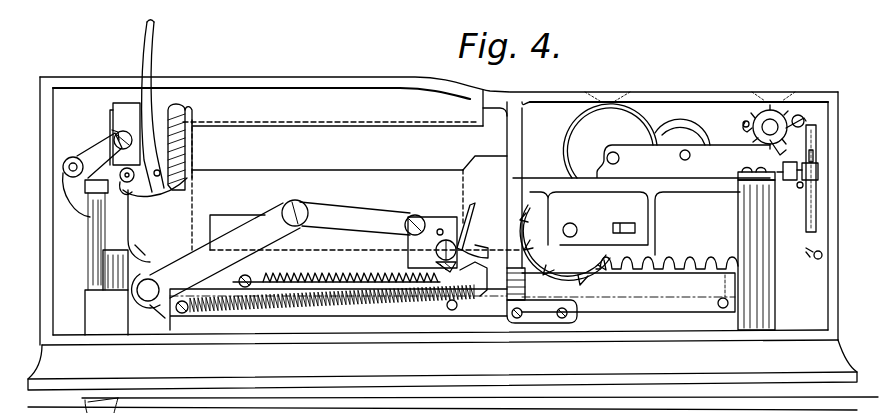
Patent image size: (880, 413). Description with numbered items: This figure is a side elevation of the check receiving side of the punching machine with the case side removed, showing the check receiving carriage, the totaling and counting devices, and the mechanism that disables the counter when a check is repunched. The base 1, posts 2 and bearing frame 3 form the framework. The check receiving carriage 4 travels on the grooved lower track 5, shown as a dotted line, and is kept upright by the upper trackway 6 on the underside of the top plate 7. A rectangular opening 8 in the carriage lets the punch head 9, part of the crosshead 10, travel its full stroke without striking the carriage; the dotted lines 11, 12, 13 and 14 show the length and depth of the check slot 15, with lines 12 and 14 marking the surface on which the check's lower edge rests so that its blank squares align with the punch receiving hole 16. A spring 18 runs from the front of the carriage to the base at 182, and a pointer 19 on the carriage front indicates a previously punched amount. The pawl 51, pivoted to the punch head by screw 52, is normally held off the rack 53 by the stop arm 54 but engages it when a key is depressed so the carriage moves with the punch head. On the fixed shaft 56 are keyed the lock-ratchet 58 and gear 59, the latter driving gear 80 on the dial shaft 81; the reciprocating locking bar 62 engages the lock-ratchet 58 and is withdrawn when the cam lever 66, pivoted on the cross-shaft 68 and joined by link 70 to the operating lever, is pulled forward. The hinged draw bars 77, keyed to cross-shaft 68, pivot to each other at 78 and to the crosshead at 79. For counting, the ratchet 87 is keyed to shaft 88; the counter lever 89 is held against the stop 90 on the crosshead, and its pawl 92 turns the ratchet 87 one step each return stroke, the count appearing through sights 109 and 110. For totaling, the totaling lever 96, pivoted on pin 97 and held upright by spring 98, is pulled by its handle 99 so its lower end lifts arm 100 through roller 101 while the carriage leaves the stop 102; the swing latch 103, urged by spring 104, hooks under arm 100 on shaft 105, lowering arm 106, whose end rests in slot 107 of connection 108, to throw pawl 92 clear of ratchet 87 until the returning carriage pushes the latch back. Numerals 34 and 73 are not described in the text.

The base 1 is at (688, 350).
The posts 2 is at (100, 258).
The bearing frame 3 is at (641, 161).
The check receiving carriage 4 is at (355, 210).
The lower track 5 is at (195, 310).
The upper trackway 6 is at (338, 128).
The top plate 7 is at (372, 90).
The rectangular opening 8 is at (230, 214).
The punch head 9 is at (432, 242).
The crosshead 10 is at (650, 264).
The dotted line 11 is at (195, 176).
The dotted line 12 is at (212, 258).
The dotted line 13 is at (466, 166).
The dotted line 14 is at (472, 256).
The check slot 15 is at (342, 172).
The punch receiving hole 16 is at (440, 228).
The spring 18 is at (350, 298).
The spring fastening point 182 is at (182, 313).
The pointer 19 is at (522, 92).
The lever 34 is at (473, 208).
The pawl 51 is at (470, 230).
The screw 52 is at (434, 264).
The rack 53 is at (322, 278).
The stop arm 54 is at (675, 260).
The shaft 56 is at (571, 224).
The lock-ratchet 58 is at (615, 272).
The gear 59 is at (565, 245).
The locking bar 62 is at (636, 222).
The cam lever 66 is at (78, 176).
The cross-shaft 68 is at (150, 300).
The link 70 is at (98, 158).
The pivot ring 73 is at (76, 158).
The hinged draw bars 77 is at (253, 250).
The pivotal connection 78 is at (303, 213).
The pivotal connection 79 is at (422, 214).
The gear 80 is at (636, 141).
The dial shaft 81 is at (613, 166).
The ratchet 87 is at (752, 116).
The shaft 88 is at (758, 140).
The counter lever 89 is at (780, 150).
The stop 90 is at (812, 256).
The pawl 92 is at (802, 115).
The totaling lever 96 is at (143, 150).
The pin 97 is at (160, 195).
The spring 98 is at (172, 106).
The handle 99 is at (152, 60).
The arm 100 is at (127, 183).
The roller 101 is at (120, 178).
The stop 102 is at (145, 255).
The swing latch 103 is at (100, 222).
The spring 104 is at (112, 148).
The shaft 105 is at (742, 170).
The arm 106 is at (808, 183).
The slot 107 is at (814, 156).
The connection 108 is at (817, 139).
The sight 109 is at (618, 95).
The sight 110 is at (765, 95).